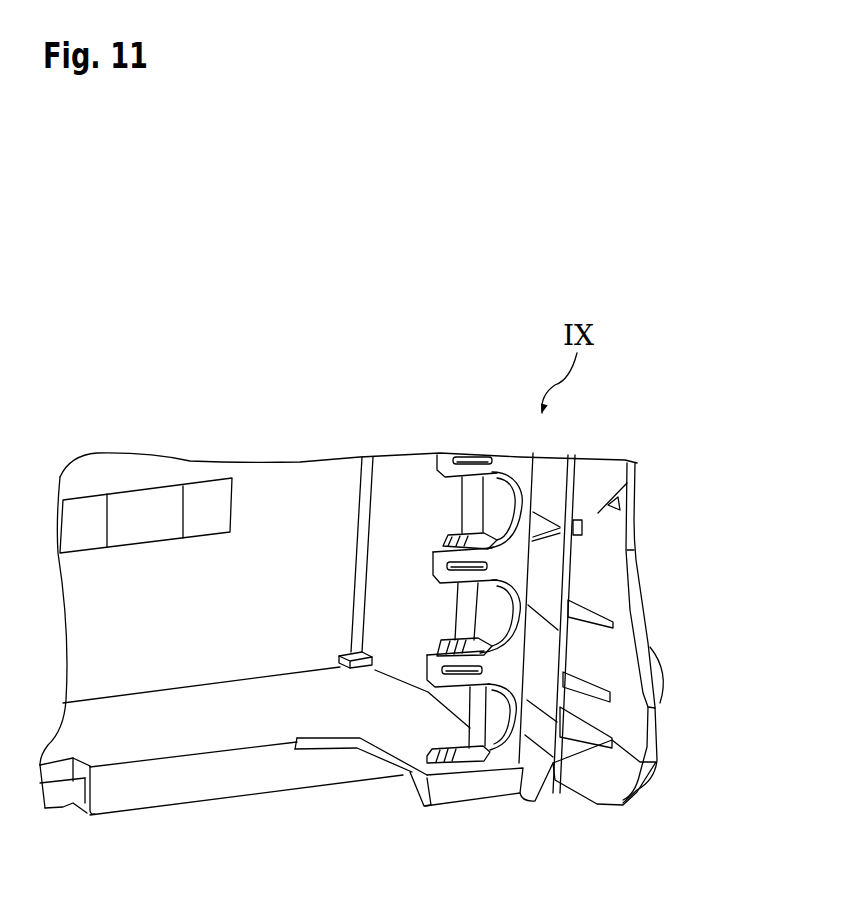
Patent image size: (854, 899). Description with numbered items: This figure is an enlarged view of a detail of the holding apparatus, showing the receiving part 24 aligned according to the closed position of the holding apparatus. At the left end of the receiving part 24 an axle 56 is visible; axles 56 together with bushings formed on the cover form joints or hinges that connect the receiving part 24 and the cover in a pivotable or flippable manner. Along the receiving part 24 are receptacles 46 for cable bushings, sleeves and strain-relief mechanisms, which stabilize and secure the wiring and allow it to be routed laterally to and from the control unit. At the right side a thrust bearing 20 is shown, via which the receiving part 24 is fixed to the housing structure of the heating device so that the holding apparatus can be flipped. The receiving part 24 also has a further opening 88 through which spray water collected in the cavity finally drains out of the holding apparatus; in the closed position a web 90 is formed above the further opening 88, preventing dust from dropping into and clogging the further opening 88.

The thrust bearing 20 is at (660, 678).
The receiving part 24 is at (143, 788).
The receptacle 46 is at (496, 507).
The axle 56 is at (55, 790).
The further opening 88 is at (340, 670).
The web 90 is at (373, 655).